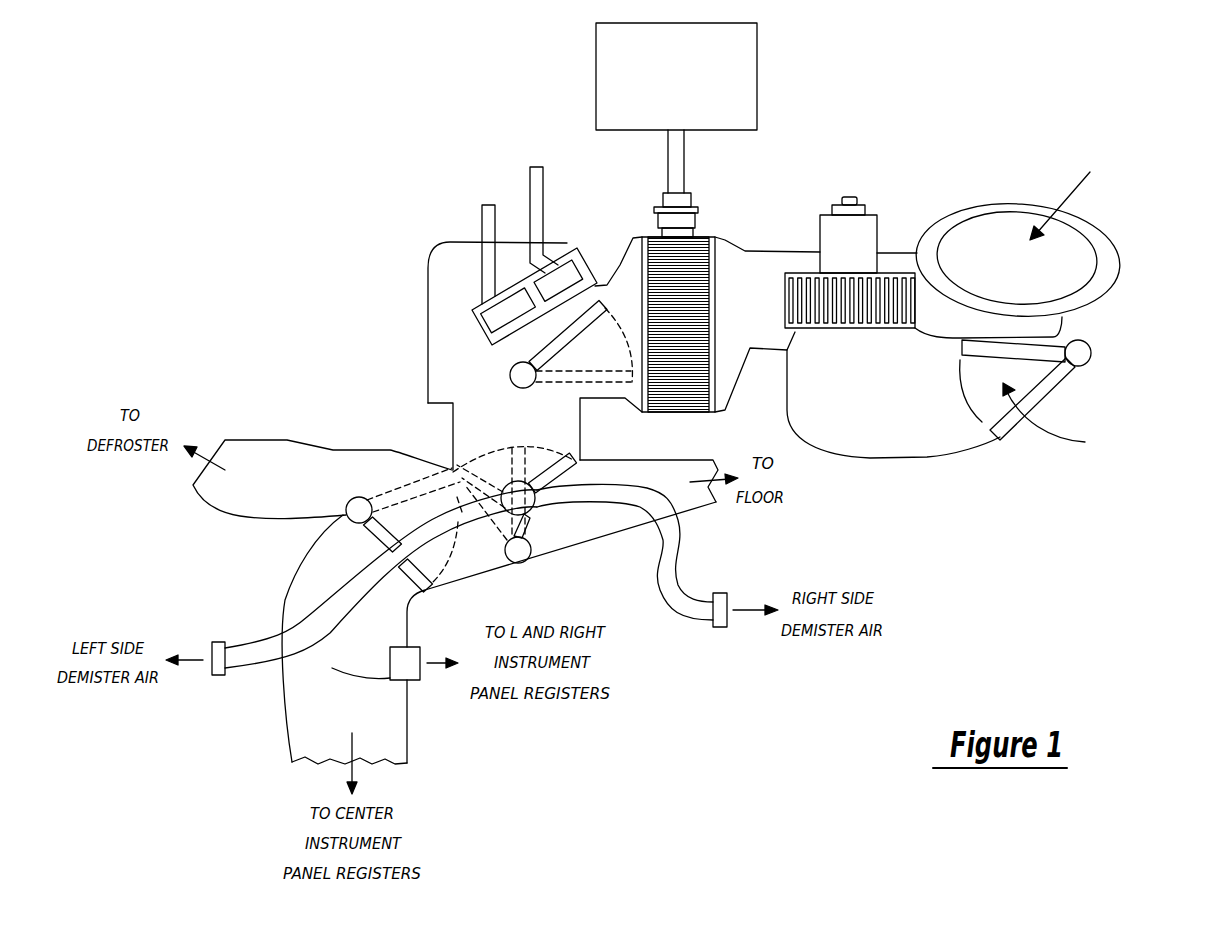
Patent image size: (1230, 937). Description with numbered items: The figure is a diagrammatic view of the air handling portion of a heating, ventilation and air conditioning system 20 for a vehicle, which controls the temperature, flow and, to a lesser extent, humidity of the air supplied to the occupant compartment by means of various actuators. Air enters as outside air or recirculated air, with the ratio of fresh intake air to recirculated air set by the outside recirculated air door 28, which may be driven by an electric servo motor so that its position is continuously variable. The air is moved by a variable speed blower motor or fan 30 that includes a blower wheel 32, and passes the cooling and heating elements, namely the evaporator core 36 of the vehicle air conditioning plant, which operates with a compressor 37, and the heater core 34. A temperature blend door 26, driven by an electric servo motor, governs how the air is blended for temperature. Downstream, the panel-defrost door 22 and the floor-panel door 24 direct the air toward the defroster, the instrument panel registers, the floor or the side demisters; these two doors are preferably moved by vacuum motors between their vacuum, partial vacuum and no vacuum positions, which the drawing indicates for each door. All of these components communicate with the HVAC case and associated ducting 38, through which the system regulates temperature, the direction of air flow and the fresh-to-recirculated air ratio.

The HVAC system 20 is at (932, 176).
The panel-defrost door 22 is at (373, 540).
The floor-panel door 24 is at (547, 517).
The temperature blend door 26 is at (537, 352).
The outside recirculated air door 28 is at (1067, 381).
The blower motor 30 is at (820, 240).
The blower wheel 32 is at (878, 273).
The heater core 34 is at (490, 325).
The evaporator core 36 is at (735, 240).
The compressor 37 is at (596, 77).
The HVAC case and associated ducting 38 is at (878, 463).